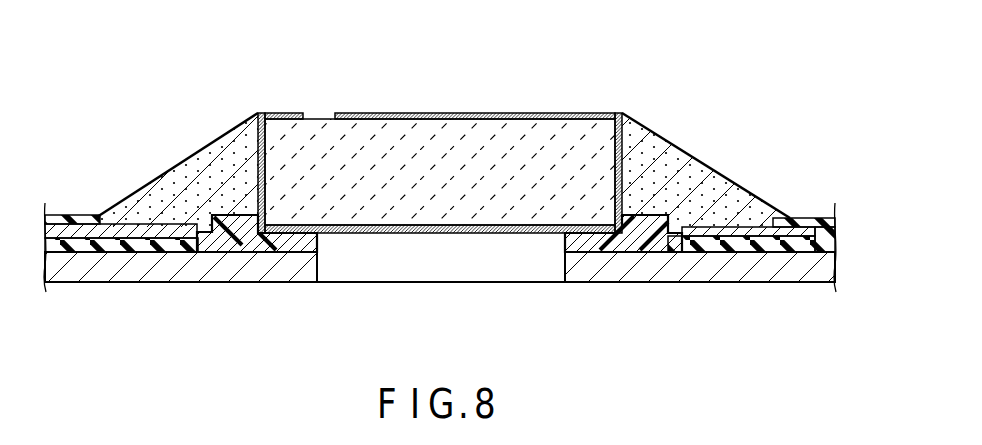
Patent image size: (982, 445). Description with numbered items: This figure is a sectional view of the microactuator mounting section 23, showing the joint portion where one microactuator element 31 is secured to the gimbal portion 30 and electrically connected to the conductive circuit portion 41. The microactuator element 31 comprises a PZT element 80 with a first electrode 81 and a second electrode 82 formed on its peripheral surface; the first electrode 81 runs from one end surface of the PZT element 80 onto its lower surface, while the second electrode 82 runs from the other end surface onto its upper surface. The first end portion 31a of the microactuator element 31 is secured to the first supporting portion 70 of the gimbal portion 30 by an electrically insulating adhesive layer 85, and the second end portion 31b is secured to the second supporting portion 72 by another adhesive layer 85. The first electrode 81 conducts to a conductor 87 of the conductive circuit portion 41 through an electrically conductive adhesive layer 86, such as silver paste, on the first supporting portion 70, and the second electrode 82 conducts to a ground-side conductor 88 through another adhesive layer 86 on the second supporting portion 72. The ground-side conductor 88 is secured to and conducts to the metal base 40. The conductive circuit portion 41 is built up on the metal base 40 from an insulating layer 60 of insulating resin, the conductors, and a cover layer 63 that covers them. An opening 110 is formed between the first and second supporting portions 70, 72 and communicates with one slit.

The microactuator mounting section 23 is at (358, 73).
The gimbal portion 30 is at (92, 301).
The microactuator element 31 is at (552, 118).
The first end portion 31a is at (239, 125).
The second end portion 31b is at (628, 150).
The metal base 40 is at (148, 263).
The conductive circuit portion 41 is at (90, 187).
The insulating layer 60 is at (65, 243).
The cover layer 63 is at (67, 215).
The first supporting portion 70 is at (203, 262).
The second supporting portion 72 is at (673, 258).
The PZT element 80 is at (423, 167).
The first electrode 81 is at (362, 233).
The second electrode 82 is at (478, 113).
The adhesive layer 85 is at (256, 236).
The electrically conductive adhesive layer 86 is at (192, 172).
The conductor 87 is at (128, 232).
The ground-side conductor 88 is at (757, 226).
The opening 110 is at (428, 281).